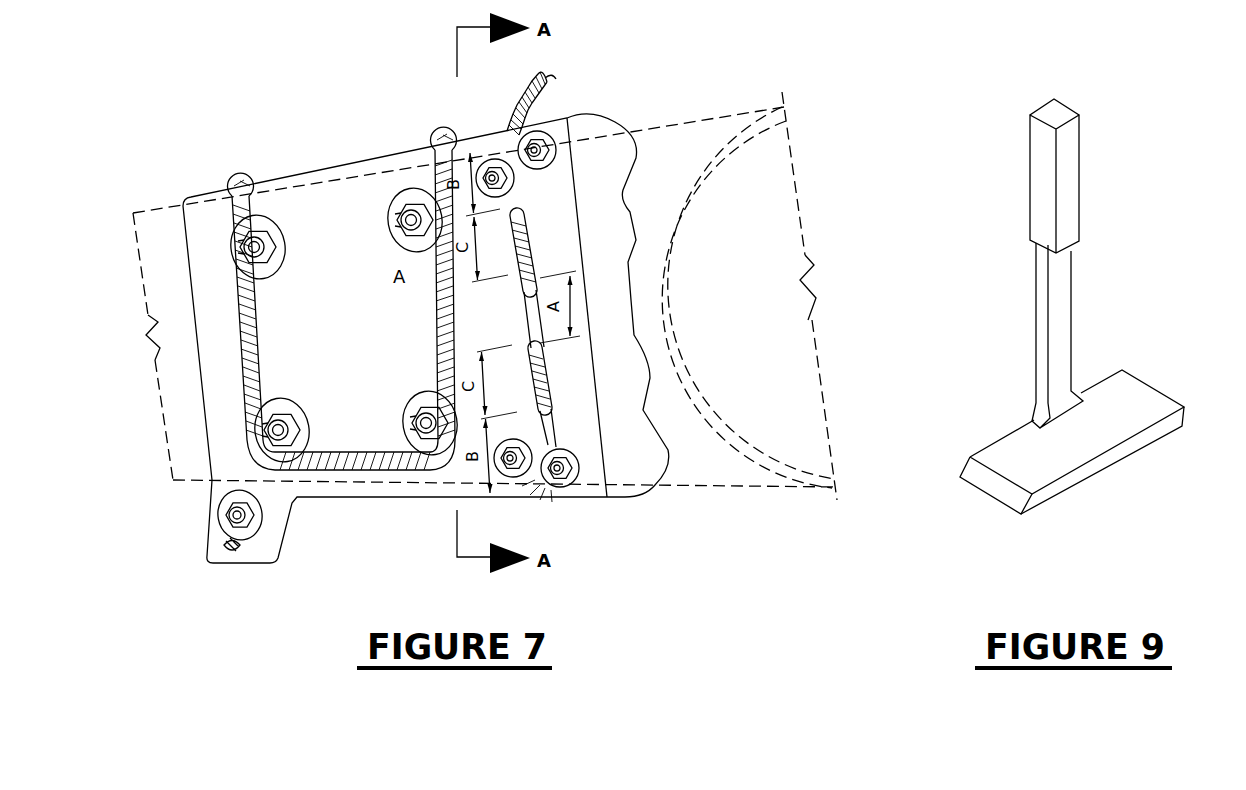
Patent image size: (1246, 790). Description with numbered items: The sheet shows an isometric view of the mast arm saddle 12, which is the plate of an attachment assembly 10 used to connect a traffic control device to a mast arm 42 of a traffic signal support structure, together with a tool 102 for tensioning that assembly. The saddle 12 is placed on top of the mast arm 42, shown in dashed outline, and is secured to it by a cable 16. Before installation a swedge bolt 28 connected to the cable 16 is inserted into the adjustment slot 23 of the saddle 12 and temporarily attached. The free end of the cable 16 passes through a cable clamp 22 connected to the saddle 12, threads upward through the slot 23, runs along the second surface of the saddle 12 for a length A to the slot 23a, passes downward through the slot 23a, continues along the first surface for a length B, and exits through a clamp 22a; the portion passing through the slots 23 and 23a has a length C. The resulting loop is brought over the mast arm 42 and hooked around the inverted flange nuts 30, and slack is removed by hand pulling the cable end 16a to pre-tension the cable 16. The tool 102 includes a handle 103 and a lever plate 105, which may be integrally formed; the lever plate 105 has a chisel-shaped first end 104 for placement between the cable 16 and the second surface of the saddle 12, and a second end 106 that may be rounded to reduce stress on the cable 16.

In FIG. 7, the attachment assembly 10 is at (859, 279).
In FIG. 7, the mast arm saddle 12 is at (240, 142).
In FIG. 7, the cable 16 is at (253, 325).
In FIG. 7, the cable end 16a is at (540, 80).
In FIG. 7, the cable clamp 22 is at (573, 486).
In FIG. 7, the cable clamp 22a is at (549, 143).
In FIG. 7, the adjustment slot 23 is at (547, 370).
In FIG. 7, the slot 23a is at (538, 240).
In FIG. 7, the swedge bolt 28 is at (230, 518).
In FIG. 7, the inverted flange nuts 30 is at (438, 388).
In FIG. 7, the mast arm 42 is at (717, 410).
In FIG. 9, the tool 102 is at (1074, 331).
In FIG. 9, the handle 103 is at (1073, 164).
In FIG. 9, the first end 104 is at (1017, 498).
In FIG. 9, the lever plate 105 is at (1071, 477).
In FIG. 9, the second end 106 is at (1147, 382).